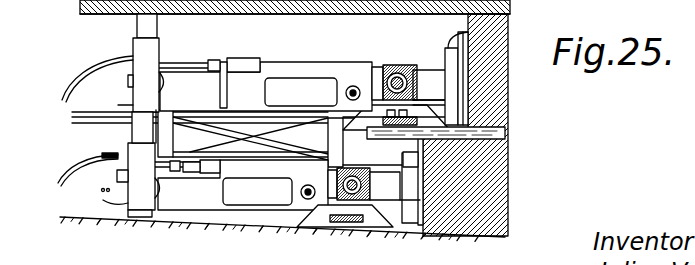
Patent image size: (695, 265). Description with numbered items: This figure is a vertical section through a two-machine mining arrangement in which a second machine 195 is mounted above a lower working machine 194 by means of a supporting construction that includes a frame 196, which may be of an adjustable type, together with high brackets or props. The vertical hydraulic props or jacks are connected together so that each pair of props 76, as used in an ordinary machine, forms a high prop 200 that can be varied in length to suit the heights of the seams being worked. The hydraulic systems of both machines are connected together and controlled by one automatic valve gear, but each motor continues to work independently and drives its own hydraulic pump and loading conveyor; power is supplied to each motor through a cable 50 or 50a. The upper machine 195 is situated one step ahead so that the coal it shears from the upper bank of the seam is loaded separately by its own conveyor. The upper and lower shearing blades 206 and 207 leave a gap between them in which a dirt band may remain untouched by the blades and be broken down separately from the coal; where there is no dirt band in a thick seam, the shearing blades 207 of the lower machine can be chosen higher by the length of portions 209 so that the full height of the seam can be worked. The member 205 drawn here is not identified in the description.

The lower hydraulic hose 50 is at (72, 165).
The upper hydraulic hose 50a is at (82, 66).
The support post 76 is at (143, 52).
The lower cylinder 194 is at (268, 208).
The upper cylinder 195 is at (292, 68).
The truss frame 196 is at (243, 133).
The connecting column section 200 is at (143, 132).
The anchor beam 205 is at (497, 137).
The frame member 206 is at (462, 62).
The wall abutment 207 is at (420, 162).
The bracket 209 is at (420, 138).